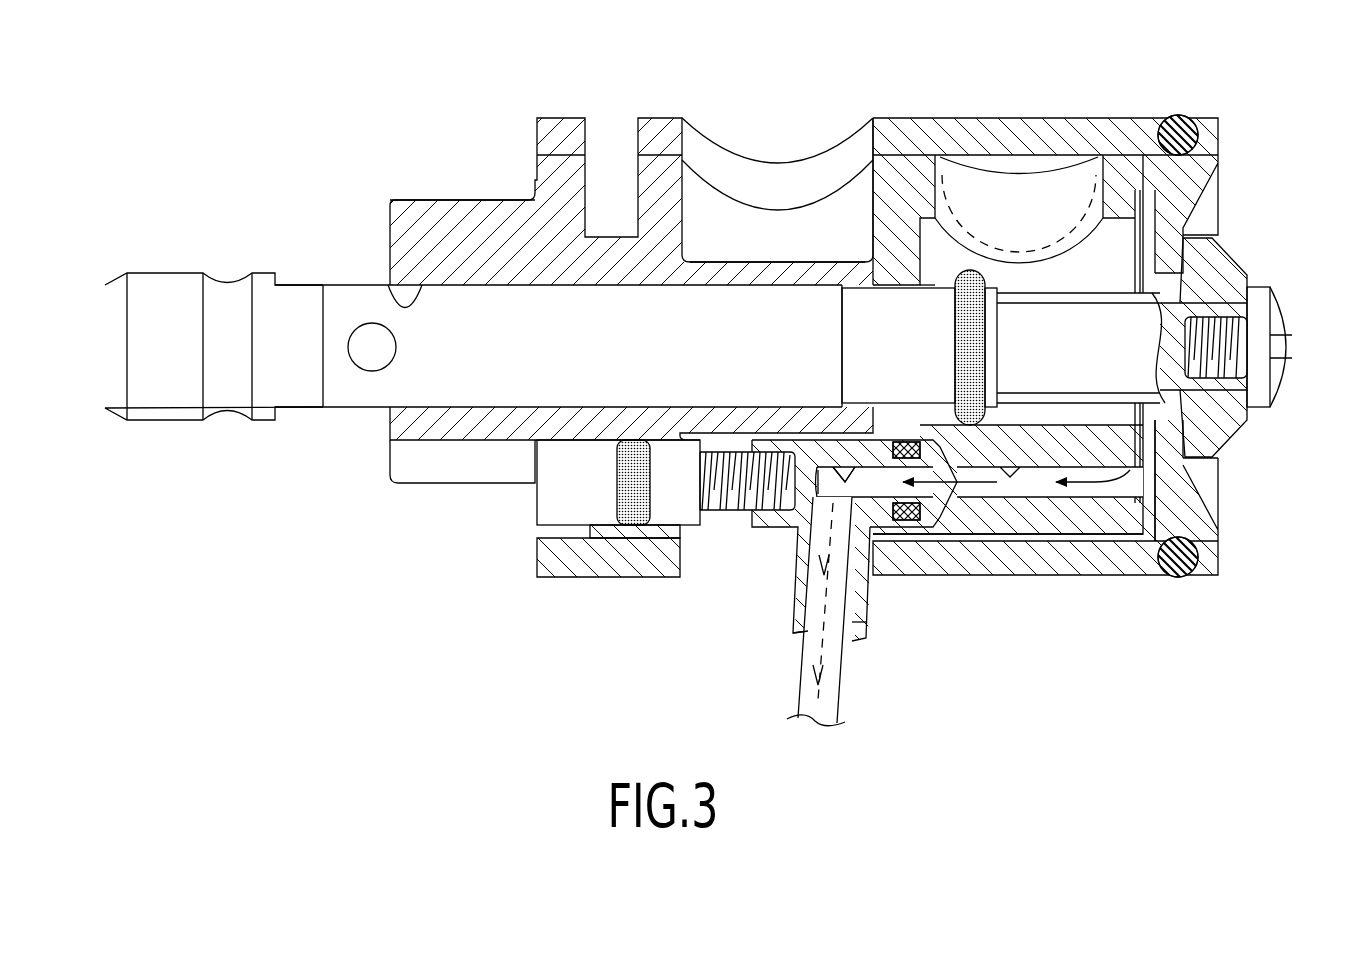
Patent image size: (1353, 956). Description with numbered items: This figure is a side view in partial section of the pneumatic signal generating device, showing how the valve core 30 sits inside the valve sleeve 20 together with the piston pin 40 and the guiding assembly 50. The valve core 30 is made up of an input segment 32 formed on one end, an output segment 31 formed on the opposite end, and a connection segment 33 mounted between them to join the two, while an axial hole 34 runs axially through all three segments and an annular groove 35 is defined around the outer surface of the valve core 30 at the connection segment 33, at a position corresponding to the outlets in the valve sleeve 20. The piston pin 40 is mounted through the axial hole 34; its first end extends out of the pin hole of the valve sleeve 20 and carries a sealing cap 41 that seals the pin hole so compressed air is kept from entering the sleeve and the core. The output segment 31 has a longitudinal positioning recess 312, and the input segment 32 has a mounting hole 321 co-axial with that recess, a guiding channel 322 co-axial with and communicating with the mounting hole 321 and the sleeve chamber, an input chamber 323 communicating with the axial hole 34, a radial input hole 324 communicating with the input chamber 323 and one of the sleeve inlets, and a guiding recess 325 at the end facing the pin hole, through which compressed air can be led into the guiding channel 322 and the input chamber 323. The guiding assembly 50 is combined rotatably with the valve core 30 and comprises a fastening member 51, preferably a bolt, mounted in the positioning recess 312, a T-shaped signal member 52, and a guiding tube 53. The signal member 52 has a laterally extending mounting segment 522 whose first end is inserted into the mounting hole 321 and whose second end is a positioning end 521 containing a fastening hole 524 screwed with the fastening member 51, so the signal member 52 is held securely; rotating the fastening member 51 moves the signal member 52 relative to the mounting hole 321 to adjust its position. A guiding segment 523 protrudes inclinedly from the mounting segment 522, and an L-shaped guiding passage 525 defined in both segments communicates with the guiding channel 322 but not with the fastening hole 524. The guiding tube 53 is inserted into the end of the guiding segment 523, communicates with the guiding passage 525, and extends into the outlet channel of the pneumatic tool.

The valve sleeve 20 is at (1222, 582).
The valve core 30 is at (380, 195).
The output segment 31 is at (515, 197).
The input segment 32 is at (913, 160).
The connection segment 33 is at (788, 267).
The axial hole 34 is at (400, 305).
The annular groove 35 is at (748, 246).
The piston pin 40 is at (160, 280).
The sealing cap 41 is at (1215, 270).
The guiding assembly 50 is at (783, 588).
The fastening member 51 is at (578, 492).
The signal member 52 is at (792, 636).
The guiding tube 53 is at (818, 703).
The positioning recess 312 is at (420, 468).
The mounting hole 321 is at (920, 534).
The guiding channel 322 is at (1012, 470).
The input chamber 323 is at (1080, 278).
The input hole 324 is at (1090, 160).
The guiding recess 325 is at (1088, 418).
The positioning end 521 is at (780, 523).
The mounting segment 522 is at (890, 445).
The guiding segment 523 is at (852, 625).
The fastening hole 524 is at (750, 468).
The guiding passage 525 is at (840, 480).